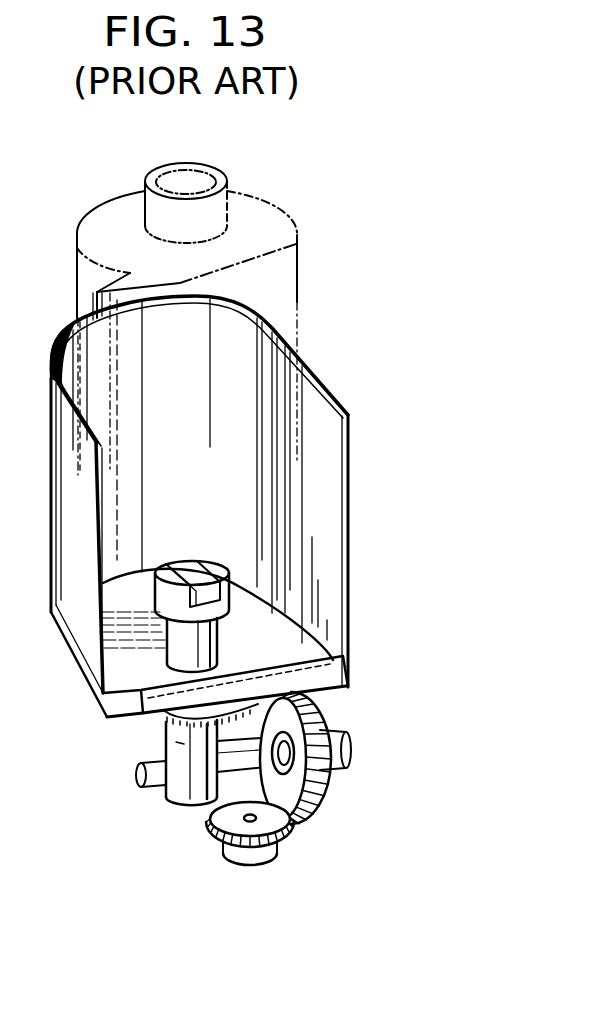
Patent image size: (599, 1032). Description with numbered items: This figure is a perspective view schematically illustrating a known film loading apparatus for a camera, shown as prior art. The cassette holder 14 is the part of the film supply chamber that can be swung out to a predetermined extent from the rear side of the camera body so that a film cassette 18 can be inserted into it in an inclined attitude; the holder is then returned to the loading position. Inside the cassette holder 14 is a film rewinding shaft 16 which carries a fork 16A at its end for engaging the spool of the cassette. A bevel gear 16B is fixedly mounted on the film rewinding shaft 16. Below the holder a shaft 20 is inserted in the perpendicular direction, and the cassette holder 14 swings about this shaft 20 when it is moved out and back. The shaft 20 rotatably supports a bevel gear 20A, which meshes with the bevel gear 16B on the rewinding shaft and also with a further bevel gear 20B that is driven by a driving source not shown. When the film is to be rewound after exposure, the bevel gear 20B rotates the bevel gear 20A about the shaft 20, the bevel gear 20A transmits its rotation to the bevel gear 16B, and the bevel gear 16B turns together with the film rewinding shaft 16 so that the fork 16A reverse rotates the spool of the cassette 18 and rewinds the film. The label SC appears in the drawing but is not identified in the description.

The film cartridge 18 is at (222, 172).
The cassette holder 14 is at (323, 413).
The film rewinding shaft 16 is at (220, 643).
The fork 16A is at (186, 562).
The bevel gear 16B is at (167, 722).
The shaft 20 is at (137, 777).
The bevel gear 20A is at (330, 788).
The bevel gear 20B is at (210, 820).
The screw SC is at (180, 743).